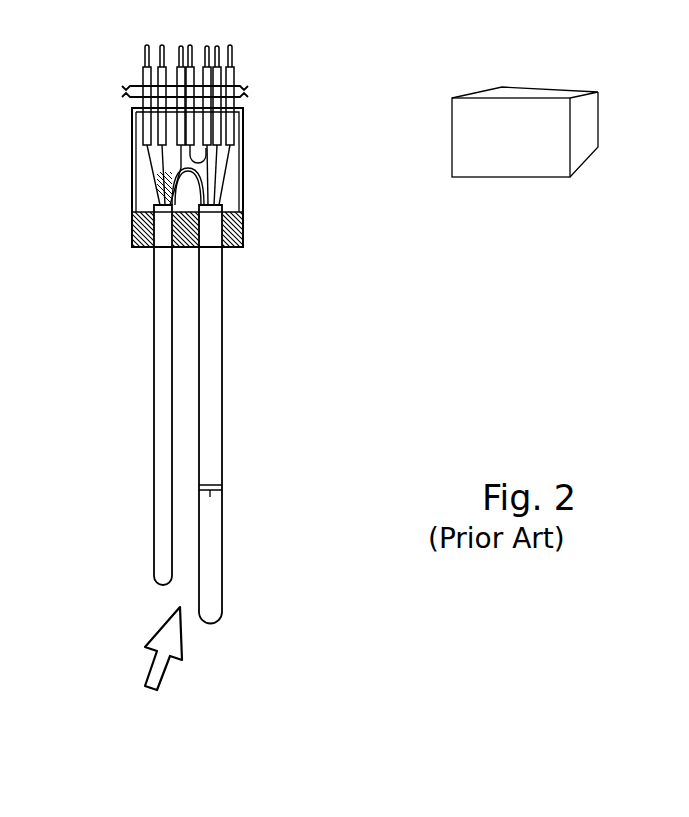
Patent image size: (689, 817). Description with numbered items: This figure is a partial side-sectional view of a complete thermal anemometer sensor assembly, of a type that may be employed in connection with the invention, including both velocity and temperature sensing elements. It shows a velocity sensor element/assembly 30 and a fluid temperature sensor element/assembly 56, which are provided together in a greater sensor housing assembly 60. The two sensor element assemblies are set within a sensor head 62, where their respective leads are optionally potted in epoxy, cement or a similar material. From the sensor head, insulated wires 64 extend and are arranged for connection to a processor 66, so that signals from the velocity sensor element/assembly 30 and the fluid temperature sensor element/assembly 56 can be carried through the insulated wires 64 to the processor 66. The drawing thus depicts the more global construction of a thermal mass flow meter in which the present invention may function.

The velocity sensor element/assembly 30 is at (223, 383).
The fluid temperature sensor element/assembly 56 is at (153, 447).
The sensor housing assembly 60 is at (90, 253).
The sensor head 62 is at (242, 245).
The insulated wires 64 is at (262, 65).
The processor 66 is at (525, 132).